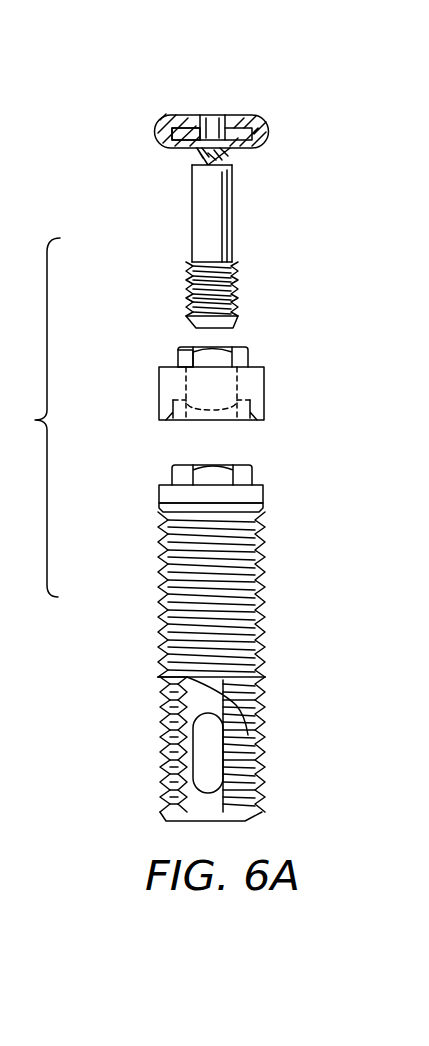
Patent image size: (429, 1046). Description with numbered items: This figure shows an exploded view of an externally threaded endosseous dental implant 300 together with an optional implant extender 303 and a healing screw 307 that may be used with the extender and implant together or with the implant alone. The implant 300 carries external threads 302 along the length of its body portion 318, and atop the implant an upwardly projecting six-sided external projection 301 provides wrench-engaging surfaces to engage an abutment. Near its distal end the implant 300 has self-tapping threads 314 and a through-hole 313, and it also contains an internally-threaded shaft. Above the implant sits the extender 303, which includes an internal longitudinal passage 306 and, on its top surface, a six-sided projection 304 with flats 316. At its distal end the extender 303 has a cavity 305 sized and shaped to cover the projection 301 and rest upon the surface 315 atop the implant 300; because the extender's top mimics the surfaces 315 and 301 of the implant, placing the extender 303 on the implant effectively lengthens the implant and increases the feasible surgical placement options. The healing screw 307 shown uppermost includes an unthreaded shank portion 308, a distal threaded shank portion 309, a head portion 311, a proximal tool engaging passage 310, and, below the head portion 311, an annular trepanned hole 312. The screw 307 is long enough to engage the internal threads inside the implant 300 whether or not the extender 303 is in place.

The endosseous dental implant 300 is at (265, 678).
The six-sided external projection 301 is at (252, 473).
The external threads 302 is at (232, 603).
The implant extender 303 is at (264, 389).
The six-sided projection 304 is at (250, 355).
The cavity 305 is at (245, 412).
The internal longitudinal passage 306 is at (212, 400).
The healing screw 307 is at (310, 218).
The unthreaded shank portion 308 is at (190, 242).
The distal threaded shank portion 309 is at (238, 296).
The proximal tool engaging passage 310 is at (213, 120).
The head portion 311 is at (276, 133).
The annular trepanned hole 312 is at (172, 142).
The through-hole 313 is at (208, 775).
The self-tapping threads 314 is at (165, 712).
The surface 315 is at (172, 470).
The nut hex flat 316 is at (178, 365).
The body portion 318 is at (158, 675).